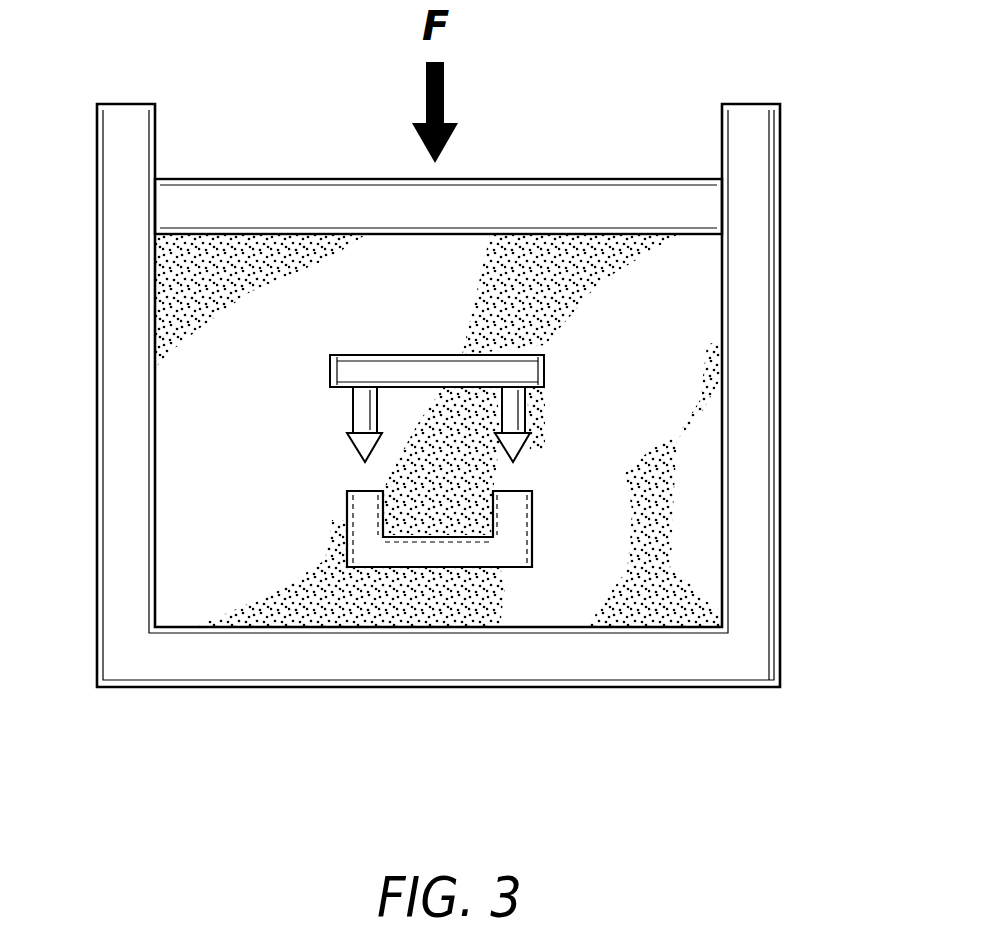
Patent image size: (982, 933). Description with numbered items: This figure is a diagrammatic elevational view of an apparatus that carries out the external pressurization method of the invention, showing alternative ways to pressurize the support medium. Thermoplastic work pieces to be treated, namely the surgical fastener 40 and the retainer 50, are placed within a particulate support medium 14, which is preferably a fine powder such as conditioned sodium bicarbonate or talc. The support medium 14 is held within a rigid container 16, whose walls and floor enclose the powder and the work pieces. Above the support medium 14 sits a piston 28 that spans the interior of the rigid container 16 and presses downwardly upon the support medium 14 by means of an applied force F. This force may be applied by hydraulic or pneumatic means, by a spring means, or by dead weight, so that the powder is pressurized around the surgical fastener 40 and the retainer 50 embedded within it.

The particulate support medium 14 is at (665, 478).
The rigid container 16 is at (760, 358).
The piston 28 is at (592, 192).
The surgical fastener 40 is at (545, 372).
The retainer 50 is at (532, 543).